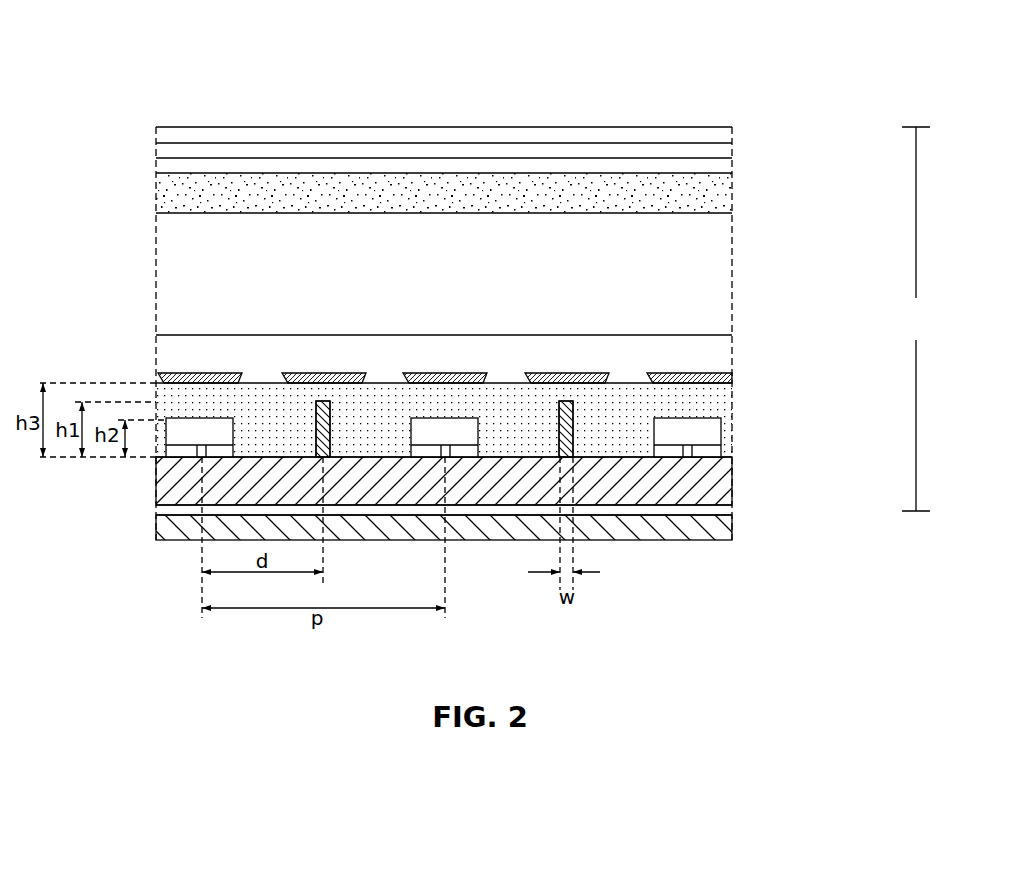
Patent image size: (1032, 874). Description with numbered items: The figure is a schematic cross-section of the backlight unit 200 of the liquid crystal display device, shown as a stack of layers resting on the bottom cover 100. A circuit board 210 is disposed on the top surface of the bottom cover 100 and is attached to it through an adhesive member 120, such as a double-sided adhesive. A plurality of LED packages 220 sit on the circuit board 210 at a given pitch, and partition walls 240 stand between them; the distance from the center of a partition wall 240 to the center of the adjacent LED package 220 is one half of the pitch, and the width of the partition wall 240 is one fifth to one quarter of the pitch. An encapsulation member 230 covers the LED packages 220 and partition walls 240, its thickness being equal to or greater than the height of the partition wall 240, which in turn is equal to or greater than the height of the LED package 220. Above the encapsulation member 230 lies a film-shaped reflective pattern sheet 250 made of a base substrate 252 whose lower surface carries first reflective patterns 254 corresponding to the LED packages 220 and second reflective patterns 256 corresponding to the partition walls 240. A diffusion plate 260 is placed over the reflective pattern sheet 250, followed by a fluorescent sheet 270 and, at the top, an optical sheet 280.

The bottom cover 100 is at (720, 532).
The adhesive member 120 is at (720, 511).
The backlight unit 200 is at (915, 319).
The circuit board 210 is at (720, 482).
The LED package 220 is at (710, 437).
The encapsulation member 230 is at (720, 400).
The partition wall 240 is at (485, 206).
The reflective pattern sheet 250 is at (445, 198).
The base substrate 252 is at (356, 358).
The first reflective pattern 254 is at (445, 372).
The second reflective pattern 256 is at (548, 373).
The diffusion plate 260 is at (720, 267).
The fluorescent sheet 270 is at (720, 193).
The optical sheet 280 is at (732, 127).